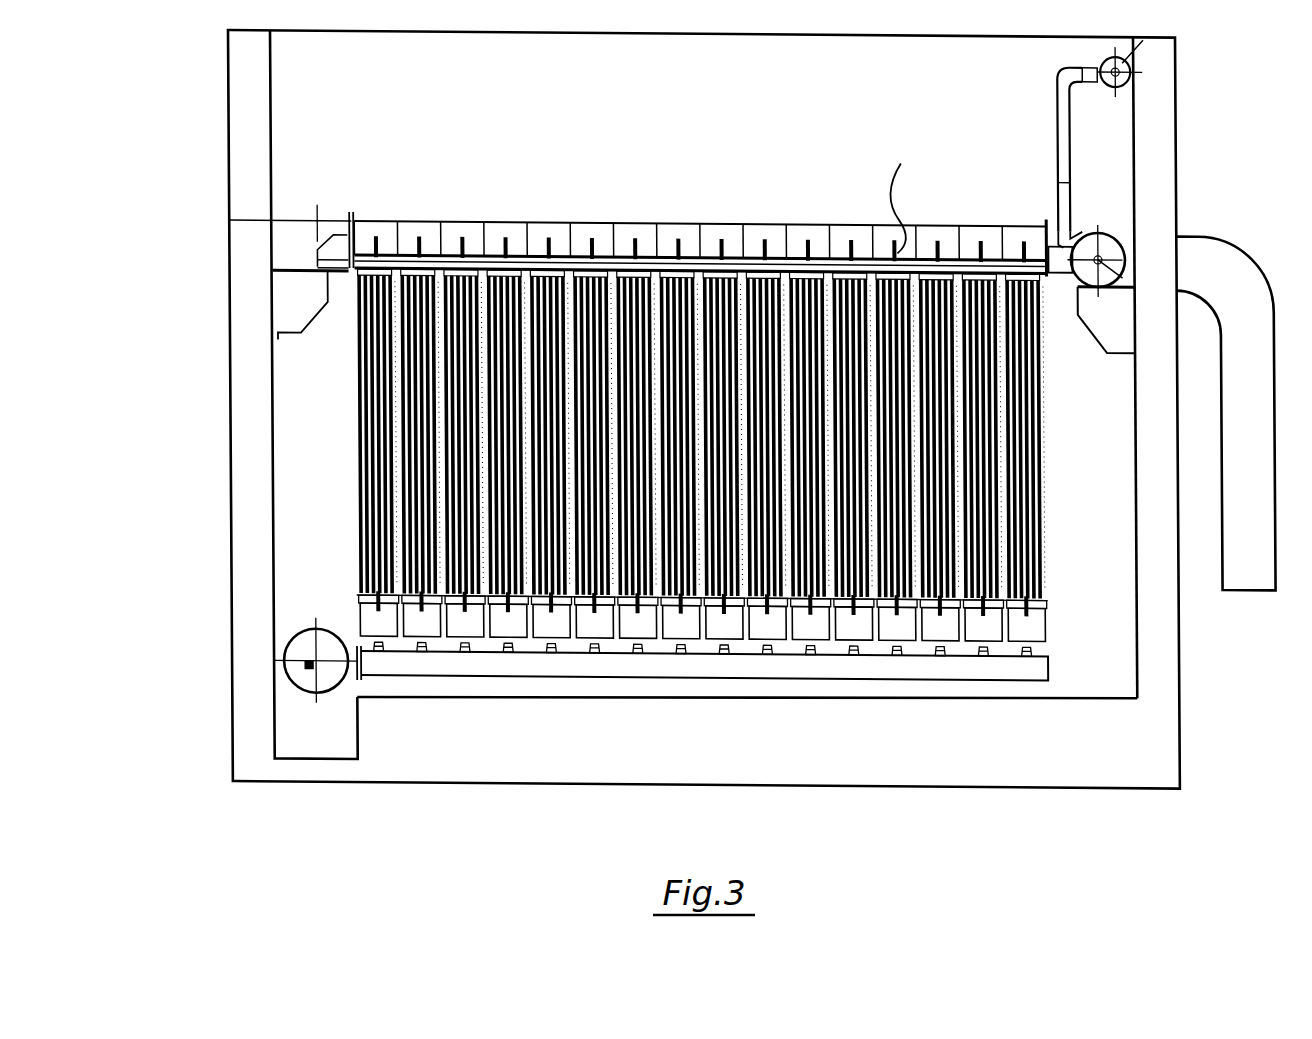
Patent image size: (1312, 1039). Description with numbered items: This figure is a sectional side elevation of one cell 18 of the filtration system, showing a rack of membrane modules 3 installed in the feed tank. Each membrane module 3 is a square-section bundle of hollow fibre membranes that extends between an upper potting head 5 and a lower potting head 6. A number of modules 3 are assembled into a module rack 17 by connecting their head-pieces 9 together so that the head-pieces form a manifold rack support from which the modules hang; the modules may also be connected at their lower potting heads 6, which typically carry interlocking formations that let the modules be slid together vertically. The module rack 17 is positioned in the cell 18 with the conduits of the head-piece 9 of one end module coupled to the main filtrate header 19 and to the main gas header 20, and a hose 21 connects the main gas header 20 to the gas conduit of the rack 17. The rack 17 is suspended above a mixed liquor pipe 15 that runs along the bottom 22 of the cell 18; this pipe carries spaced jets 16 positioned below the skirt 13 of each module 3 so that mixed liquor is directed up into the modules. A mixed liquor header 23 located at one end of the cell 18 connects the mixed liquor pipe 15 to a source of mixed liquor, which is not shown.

The membrane module 3 is at (1046, 475).
The upper potting head 5 is at (335, 272).
The lower potting head 6 is at (356, 602).
The head-piece 9 is at (379, 232).
The skirt 13 is at (1026, 622).
The mixed liquor pipe 15 is at (826, 662).
The jets 16 is at (1028, 646).
The module rack 17 is at (725, 195).
The cell 18 is at (242, 497).
The main filtrate header 19 is at (1106, 245).
The main gas header 20 is at (1135, 78).
The hose 21 is at (1059, 143).
The bottom 22 is at (431, 698).
The mixed liquor header 23 is at (301, 667).